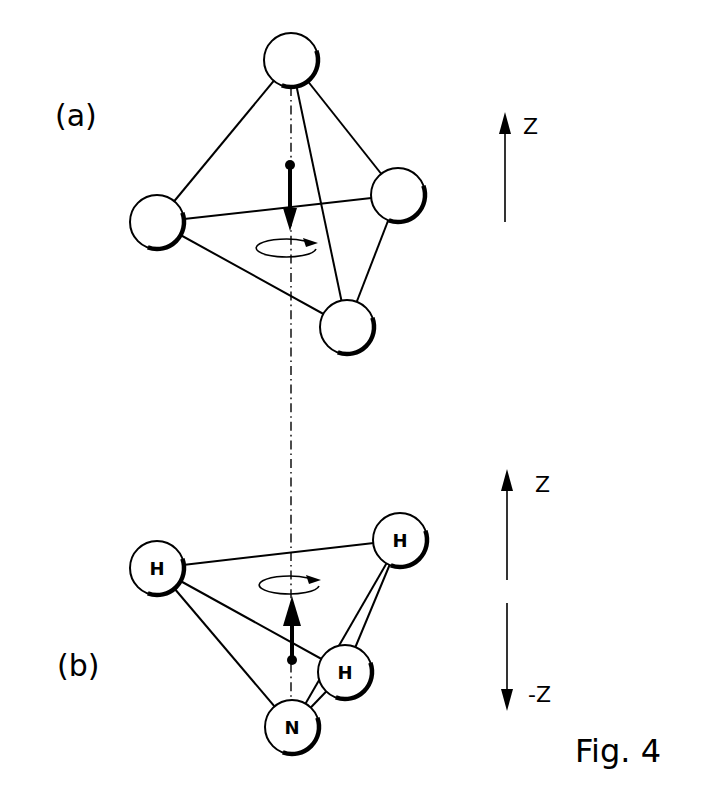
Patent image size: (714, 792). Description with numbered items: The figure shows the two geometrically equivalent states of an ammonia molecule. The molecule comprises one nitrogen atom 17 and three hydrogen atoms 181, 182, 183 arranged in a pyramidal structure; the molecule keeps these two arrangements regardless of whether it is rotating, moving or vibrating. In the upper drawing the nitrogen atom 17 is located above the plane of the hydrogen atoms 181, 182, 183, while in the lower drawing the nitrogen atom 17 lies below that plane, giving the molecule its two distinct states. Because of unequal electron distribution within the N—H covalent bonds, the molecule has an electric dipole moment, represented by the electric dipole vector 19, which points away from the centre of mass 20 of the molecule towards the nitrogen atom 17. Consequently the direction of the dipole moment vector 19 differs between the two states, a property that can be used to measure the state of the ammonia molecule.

The nitrogen atom 17 is at (316, 41).
The hydrogen atom 181 is at (424, 212).
The hydrogen atom 182 is at (375, 324).
The hydrogen atom 183 is at (148, 248).
The electric dipole vector 19 is at (287, 178).
The centre of mass 20 is at (295, 165).